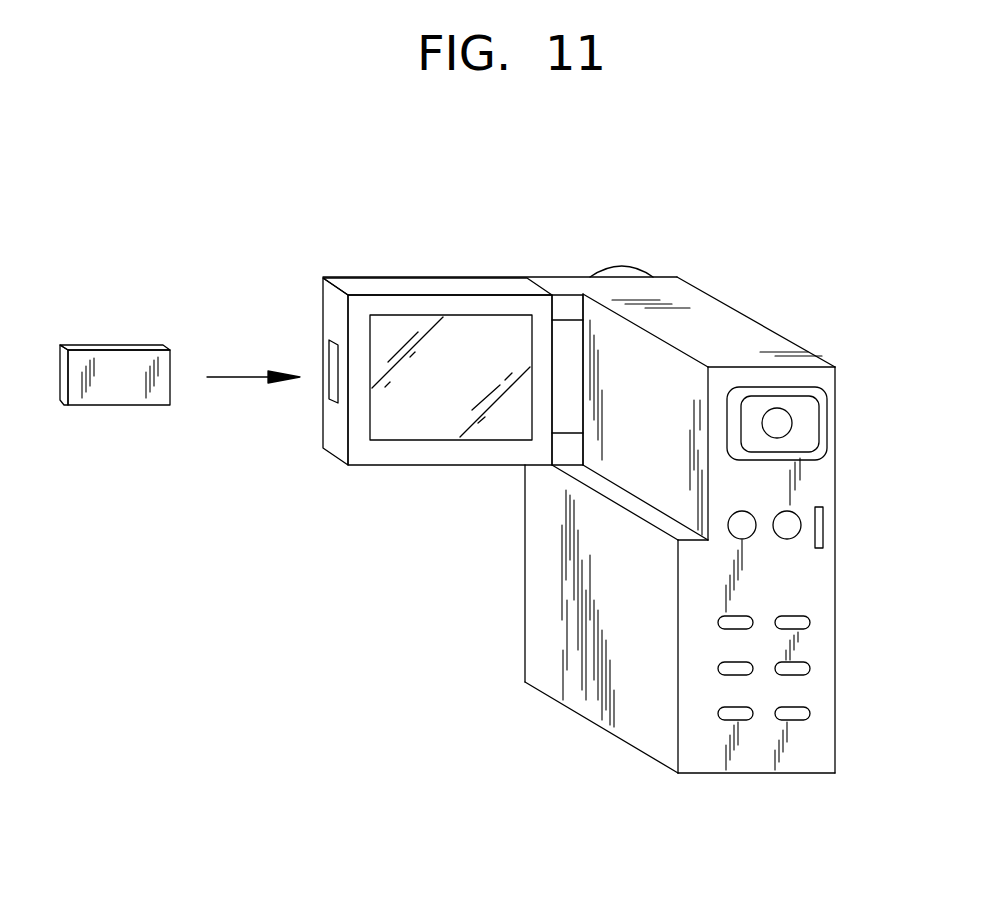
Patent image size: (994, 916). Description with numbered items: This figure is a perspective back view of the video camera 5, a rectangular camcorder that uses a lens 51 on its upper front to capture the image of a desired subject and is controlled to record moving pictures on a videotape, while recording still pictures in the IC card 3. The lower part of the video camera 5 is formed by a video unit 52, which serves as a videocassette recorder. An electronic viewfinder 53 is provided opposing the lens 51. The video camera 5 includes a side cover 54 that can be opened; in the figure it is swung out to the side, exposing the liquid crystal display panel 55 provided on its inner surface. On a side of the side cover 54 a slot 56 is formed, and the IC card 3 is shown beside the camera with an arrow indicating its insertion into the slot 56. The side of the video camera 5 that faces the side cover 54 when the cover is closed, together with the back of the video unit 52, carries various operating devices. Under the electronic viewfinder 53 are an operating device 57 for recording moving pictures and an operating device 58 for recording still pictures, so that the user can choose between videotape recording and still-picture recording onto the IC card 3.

The IC card 3 is at (113, 388).
The video camera 5 is at (558, 485).
The lens 51 is at (622, 267).
The video unit 52 is at (592, 703).
The electronic viewfinder 53 is at (807, 427).
The side cover 54 is at (389, 388).
The liquid crystal display panel 55 is at (422, 408).
The slot 56 is at (320, 355).
The operating device for recording moving pictures 57 is at (742, 521).
The operating device for recording still pictures 58 is at (787, 525).